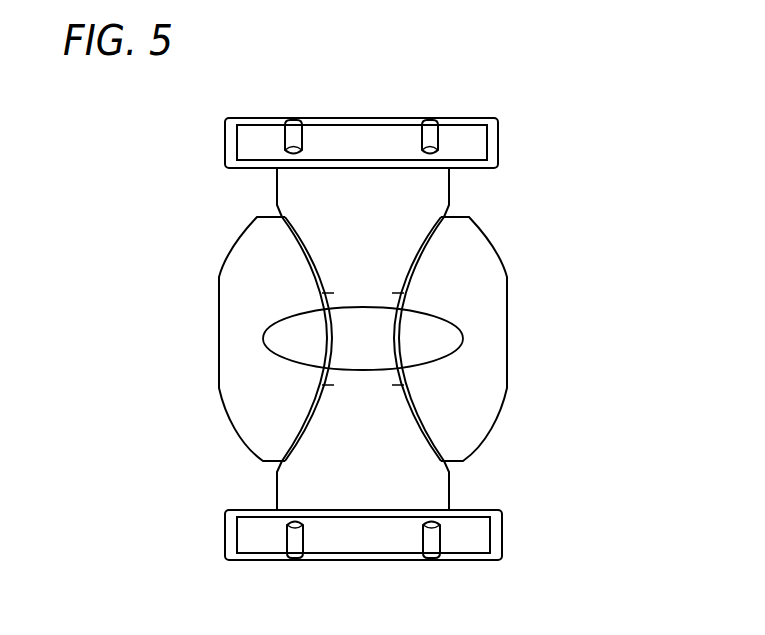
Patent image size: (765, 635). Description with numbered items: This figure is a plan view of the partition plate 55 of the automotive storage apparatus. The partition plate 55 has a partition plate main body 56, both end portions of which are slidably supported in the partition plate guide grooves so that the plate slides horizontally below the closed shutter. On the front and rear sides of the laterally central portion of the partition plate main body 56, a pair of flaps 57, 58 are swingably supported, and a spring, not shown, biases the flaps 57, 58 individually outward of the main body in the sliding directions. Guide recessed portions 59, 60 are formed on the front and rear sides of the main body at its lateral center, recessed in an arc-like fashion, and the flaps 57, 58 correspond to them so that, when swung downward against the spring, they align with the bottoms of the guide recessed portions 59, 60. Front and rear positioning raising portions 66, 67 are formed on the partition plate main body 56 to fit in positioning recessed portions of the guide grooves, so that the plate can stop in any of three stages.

The partition plate 55 is at (572, 303).
The partition plate main body 56 is at (357, 192).
The flap 57 is at (253, 283).
The flap 58 is at (473, 285).
The guide recessed portion 59 is at (398, 335).
The guide recessed portion 60 is at (395, 338).
The front positioning raising portion 66 is at (295, 121).
The rear positioning raising portion 67 is at (432, 121).